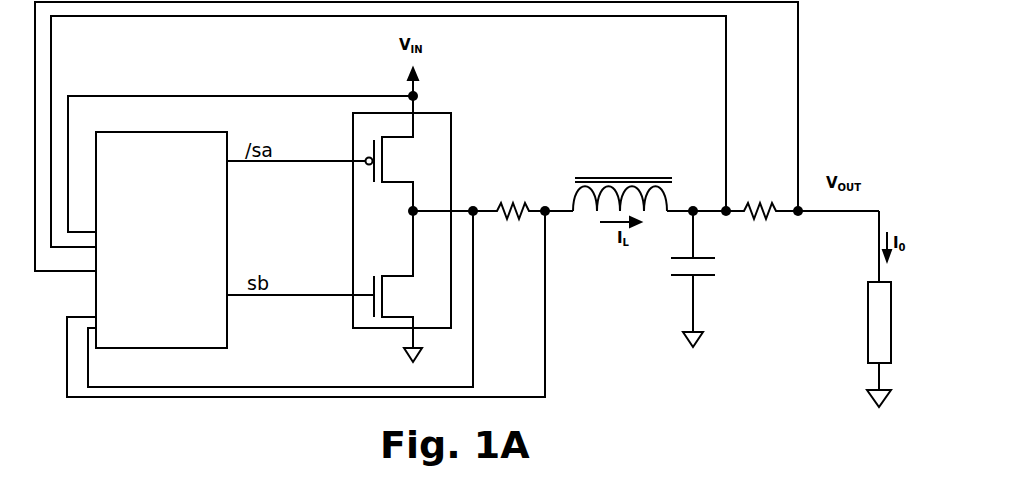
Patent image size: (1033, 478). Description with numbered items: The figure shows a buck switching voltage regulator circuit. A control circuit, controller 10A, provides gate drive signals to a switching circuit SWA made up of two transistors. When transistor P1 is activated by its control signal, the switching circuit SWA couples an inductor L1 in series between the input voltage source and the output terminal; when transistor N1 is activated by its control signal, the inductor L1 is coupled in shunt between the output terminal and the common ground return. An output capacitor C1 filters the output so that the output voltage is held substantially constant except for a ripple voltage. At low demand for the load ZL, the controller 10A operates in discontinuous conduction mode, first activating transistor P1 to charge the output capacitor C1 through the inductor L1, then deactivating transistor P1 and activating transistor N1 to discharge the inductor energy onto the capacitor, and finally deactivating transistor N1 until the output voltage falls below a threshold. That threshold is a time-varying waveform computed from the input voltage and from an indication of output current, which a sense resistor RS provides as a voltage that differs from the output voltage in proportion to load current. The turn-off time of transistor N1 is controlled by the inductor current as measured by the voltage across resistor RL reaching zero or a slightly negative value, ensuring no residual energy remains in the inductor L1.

The controller 10A is at (161, 240).
The switching circuit SWA is at (442, 113).
The transistor P1 is at (405, 153).
The transistor N1 is at (410, 286).
The resistor RL is at (512, 225).
The inductor L1 is at (622, 178).
The output capacitor C1 is at (678, 279).
The sense resistor RS is at (759, 226).
The load ZL is at (867, 296).